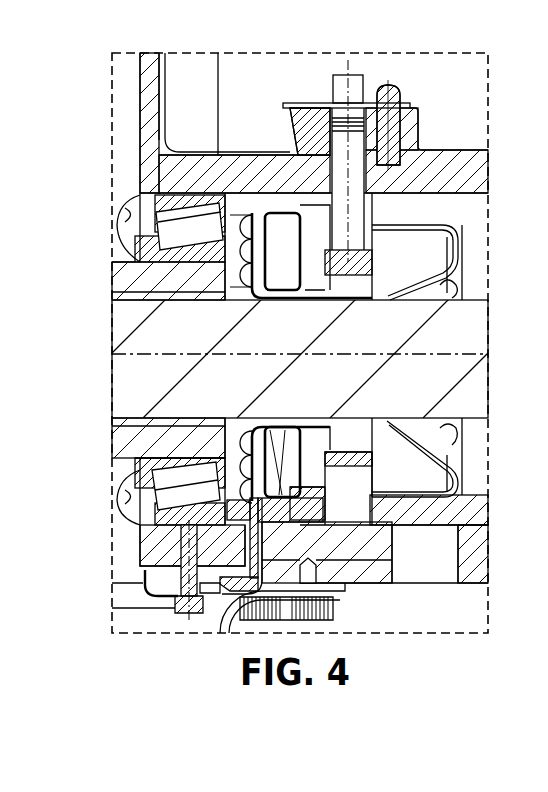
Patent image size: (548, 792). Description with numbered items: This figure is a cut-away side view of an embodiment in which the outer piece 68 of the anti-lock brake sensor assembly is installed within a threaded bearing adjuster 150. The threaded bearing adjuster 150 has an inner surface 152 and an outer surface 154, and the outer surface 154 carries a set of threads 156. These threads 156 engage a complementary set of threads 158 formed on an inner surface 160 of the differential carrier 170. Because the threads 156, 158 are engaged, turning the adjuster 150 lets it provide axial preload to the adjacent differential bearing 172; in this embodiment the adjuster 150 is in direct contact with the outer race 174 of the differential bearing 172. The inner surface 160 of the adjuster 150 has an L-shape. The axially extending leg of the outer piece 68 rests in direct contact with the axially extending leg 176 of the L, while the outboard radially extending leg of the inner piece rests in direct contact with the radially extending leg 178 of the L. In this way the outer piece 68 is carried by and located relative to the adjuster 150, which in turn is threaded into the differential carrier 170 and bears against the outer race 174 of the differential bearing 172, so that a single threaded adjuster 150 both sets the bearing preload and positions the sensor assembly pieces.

The outer piece 68 is at (285, 208).
The threaded bearing adjuster 150 is at (292, 205).
The inner surface 152 is at (236, 183).
The outer surface 154 is at (331, 132).
The threads 156 is at (313, 210).
The complimentary set of threads 158 is at (290, 200).
The inner surface 160 is at (305, 522).
The differential carrier 170 is at (368, 585).
The differential bearing 172 is at (140, 278).
The outer race 174 is at (180, 193).
The axially extending leg 176 is at (272, 432).
The radially extending leg 178 is at (320, 428).